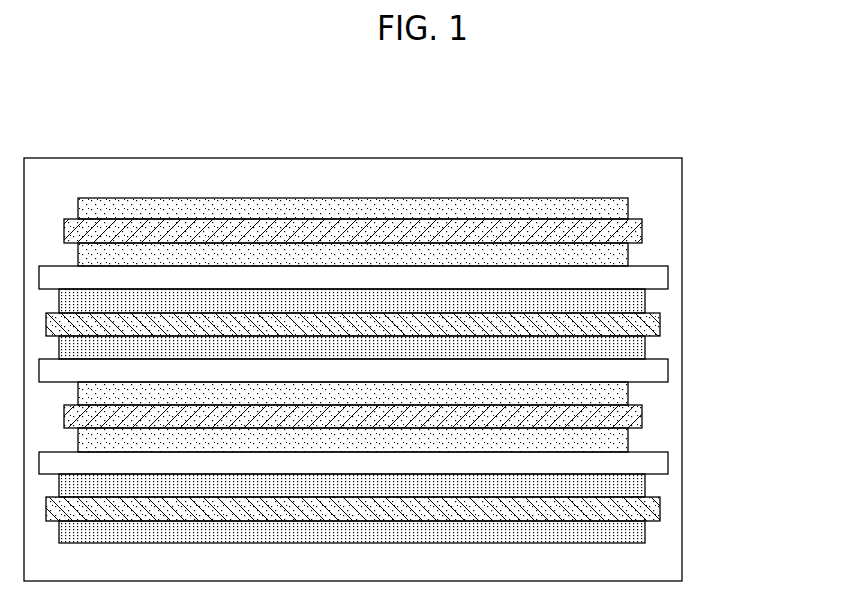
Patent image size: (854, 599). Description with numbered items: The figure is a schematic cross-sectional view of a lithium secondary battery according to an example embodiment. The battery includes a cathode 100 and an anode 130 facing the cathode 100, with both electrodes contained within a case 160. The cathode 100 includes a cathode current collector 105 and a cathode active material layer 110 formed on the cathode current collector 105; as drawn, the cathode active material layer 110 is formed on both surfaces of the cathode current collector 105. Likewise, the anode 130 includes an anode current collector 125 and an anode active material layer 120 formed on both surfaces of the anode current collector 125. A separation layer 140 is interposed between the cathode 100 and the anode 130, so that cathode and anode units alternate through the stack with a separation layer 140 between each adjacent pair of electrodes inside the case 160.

The cathode 100 is at (444, 324).
The cathode current collector 105 is at (642, 232).
The cathode active material layer 110 is at (628, 205).
The anode active material layer 120 is at (645, 297).
The anode current collector 125 is at (660, 322).
The anode 130 is at (435, 416).
The separation layer 140 is at (546, 272).
The case 160 is at (682, 508).